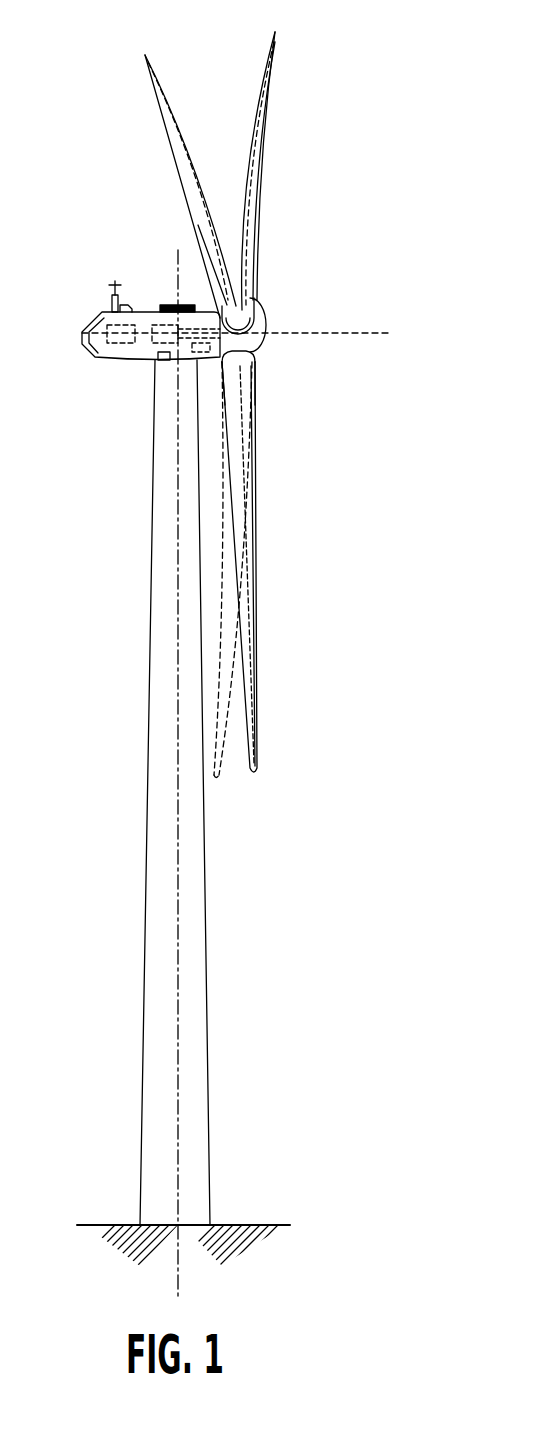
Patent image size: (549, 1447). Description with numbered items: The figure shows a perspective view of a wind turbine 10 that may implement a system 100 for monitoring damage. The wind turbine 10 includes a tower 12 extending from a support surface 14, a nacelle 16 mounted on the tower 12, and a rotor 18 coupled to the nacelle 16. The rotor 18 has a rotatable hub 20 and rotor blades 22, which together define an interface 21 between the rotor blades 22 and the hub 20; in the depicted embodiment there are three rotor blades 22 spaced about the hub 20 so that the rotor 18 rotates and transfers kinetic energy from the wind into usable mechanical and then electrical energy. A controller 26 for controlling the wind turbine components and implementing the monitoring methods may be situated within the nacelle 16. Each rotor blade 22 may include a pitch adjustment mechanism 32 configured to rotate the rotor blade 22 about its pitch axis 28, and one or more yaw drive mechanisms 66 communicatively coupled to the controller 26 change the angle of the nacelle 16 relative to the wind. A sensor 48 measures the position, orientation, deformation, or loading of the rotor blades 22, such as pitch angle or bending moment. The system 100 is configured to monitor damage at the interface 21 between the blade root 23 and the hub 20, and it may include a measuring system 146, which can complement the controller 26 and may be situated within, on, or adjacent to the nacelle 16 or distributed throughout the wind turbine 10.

The wind turbine 10 is at (426, 100).
The tower 12 is at (205, 990).
The support surface 14 is at (242, 1225).
The nacelle 16 is at (100, 356).
The rotor 18 is at (291, 294).
The hub 20 is at (258, 325).
The interface 21 is at (256, 350).
The rotor blade 22 is at (168, 115).
The blade root 23 is at (283, 373).
The controller 26 is at (108, 325).
The pitch axis 28 is at (248, 473).
The pitch adjustment mechanism 32 is at (160, 325).
The sensor 48 is at (278, 427).
The yaw drive mechanism 66 is at (158, 360).
The system for monitoring damage 100 is at (219, 355).
The measuring system 146 is at (193, 352).